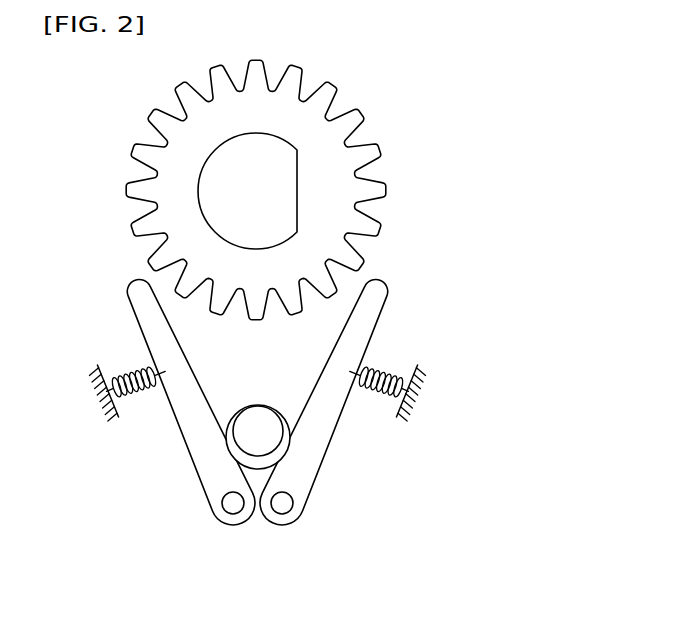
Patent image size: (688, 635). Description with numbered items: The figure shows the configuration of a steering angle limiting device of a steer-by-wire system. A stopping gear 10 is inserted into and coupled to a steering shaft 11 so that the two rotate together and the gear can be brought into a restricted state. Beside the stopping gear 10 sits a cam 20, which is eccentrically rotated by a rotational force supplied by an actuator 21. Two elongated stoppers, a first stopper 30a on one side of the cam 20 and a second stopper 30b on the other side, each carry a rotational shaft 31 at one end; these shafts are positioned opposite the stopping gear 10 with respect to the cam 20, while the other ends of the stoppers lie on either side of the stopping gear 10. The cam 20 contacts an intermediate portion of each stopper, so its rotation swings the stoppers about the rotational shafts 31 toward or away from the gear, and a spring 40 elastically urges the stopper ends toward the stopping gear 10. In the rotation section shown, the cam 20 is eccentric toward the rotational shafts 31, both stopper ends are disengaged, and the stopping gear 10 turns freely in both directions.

The stopping gear 10 is at (342, 160).
The steering shaft 11 is at (214, 185).
The cam 20 is at (280, 452).
The actuator 21 is at (244, 438).
The first stopper 30a is at (185, 428).
The second stopper 30b is at (330, 428).
The rotational shaft 31 is at (280, 518).
The spring 40 is at (131, 372).